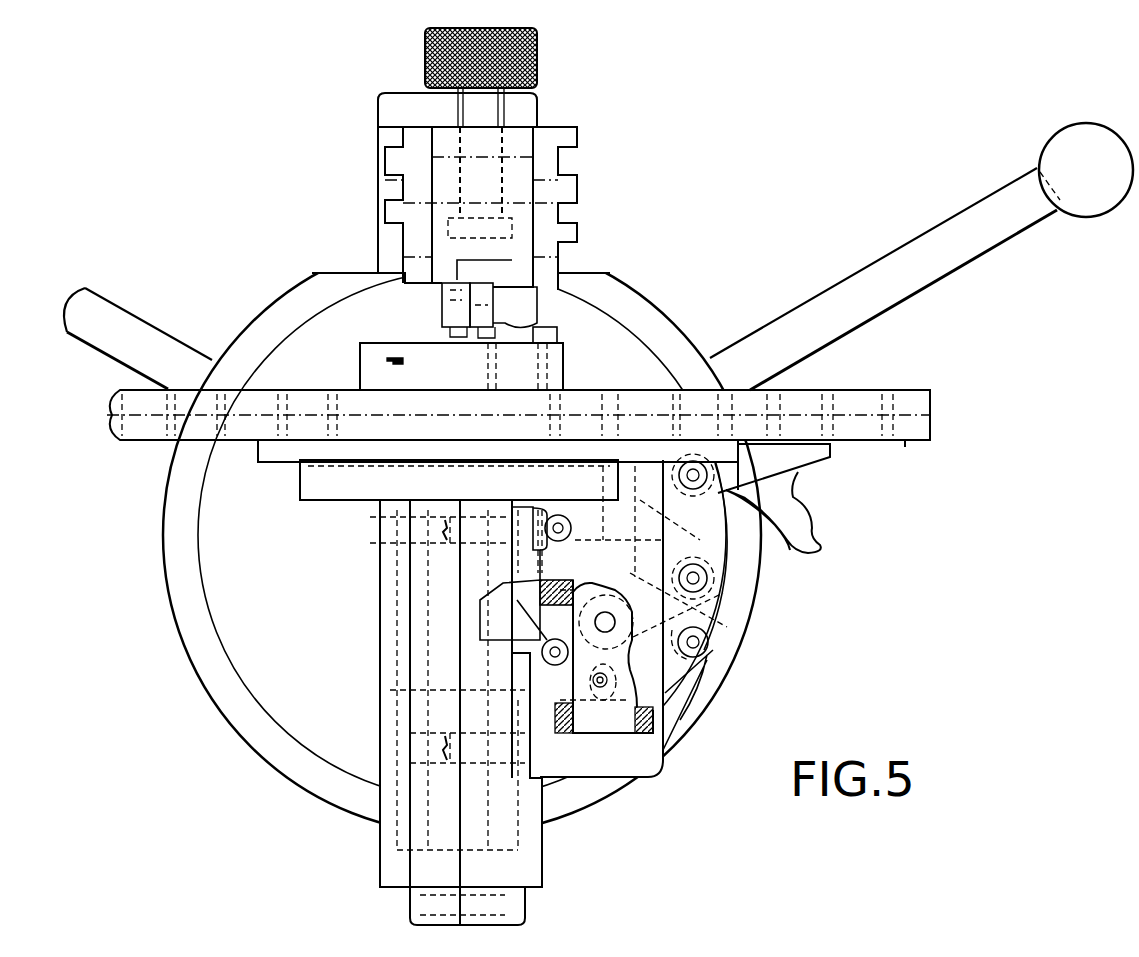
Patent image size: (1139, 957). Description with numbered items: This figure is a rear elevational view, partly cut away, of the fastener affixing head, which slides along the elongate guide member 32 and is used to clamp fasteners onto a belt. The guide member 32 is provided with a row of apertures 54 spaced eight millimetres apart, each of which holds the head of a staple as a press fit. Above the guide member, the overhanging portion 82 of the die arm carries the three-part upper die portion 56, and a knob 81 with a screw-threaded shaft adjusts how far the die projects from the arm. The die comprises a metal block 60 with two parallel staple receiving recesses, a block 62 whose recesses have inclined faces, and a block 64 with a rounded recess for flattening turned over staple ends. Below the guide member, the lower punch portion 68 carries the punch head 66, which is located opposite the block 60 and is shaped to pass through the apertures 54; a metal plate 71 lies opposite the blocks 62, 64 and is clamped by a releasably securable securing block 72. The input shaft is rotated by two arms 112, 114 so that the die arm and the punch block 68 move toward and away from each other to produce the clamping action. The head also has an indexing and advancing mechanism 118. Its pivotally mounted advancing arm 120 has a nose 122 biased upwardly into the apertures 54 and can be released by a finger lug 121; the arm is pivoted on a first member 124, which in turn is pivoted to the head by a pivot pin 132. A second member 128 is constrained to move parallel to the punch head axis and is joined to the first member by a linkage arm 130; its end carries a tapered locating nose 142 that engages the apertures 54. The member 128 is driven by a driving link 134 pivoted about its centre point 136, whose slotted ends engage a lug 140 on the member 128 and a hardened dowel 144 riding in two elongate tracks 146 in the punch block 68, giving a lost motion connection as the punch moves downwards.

The knob 81 is at (538, 74).
The overhanging portion 82 is at (540, 110).
The upper die portion 56 is at (560, 290).
The metal block 60 is at (453, 308).
The block 62 is at (480, 315).
The block 64 is at (539, 307).
The securing block 72 is at (560, 347).
The metal plate 71 is at (520, 378).
The punch head 66 is at (455, 375).
The apertures 54 is at (900, 392).
The nose 122 is at (826, 392).
The elongate guide member 32 is at (905, 447).
The tapered locating nose 142 is at (633, 462).
The advancing arm 120 is at (823, 463).
The finger lug 121 is at (820, 526).
The punch block 68 is at (420, 612).
The centre point 136 is at (528, 672).
The elongate tracks 146 is at (517, 580).
The hardened dowel 144 is at (480, 638).
The second member 128 is at (605, 733).
The lug 140 is at (640, 705).
The driving link 134 is at (627, 777).
The first member 124 is at (740, 565).
The indexing and advancing mechanism 118 is at (728, 600).
The linkage arm 130 is at (722, 632).
The pivot pin 132 is at (700, 672).
The arm 114 is at (994, 246).
The arm 112 is at (163, 303).